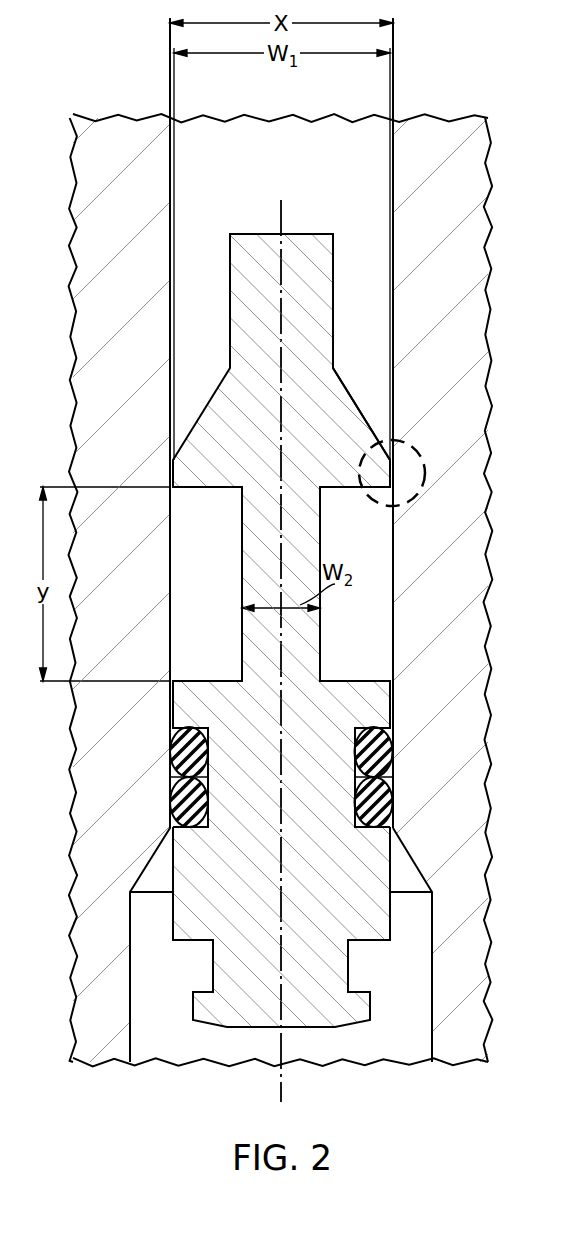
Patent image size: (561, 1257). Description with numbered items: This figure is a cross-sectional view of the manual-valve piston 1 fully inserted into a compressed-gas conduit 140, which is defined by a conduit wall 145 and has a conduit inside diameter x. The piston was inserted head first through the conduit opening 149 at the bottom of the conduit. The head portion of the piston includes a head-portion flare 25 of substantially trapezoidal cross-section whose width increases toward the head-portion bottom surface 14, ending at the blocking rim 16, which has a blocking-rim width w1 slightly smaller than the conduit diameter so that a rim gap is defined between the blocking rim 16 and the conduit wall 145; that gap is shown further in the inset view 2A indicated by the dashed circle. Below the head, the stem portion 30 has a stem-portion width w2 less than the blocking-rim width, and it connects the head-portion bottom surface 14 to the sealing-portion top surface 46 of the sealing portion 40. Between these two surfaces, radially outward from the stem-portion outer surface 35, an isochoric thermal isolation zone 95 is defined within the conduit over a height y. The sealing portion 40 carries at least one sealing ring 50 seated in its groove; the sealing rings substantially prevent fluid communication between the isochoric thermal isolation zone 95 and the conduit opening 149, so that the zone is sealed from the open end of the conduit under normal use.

The manual-valve piston 1 is at (206, 316).
The head-portion bottom surface 14 is at (211, 489).
The blocking rim 16 is at (170, 478).
The head-portion flare 25 is at (350, 398).
The stem portion 30 is at (268, 571).
The stem-portion outer surface 35 is at (328, 650).
The sealing portion 40 is at (347, 909).
The sealing-portion top surface 46 is at (208, 681).
The sealing ring 50 is at (386, 798).
The isochoric thermal isolation zone 95 is at (198, 615).
The compressed-gas conduit 140 is at (275, 153).
The conduit wall 145 is at (393, 196).
The conduit opening 149 is at (323, 1055).
The inset view 2A is at (425, 462).